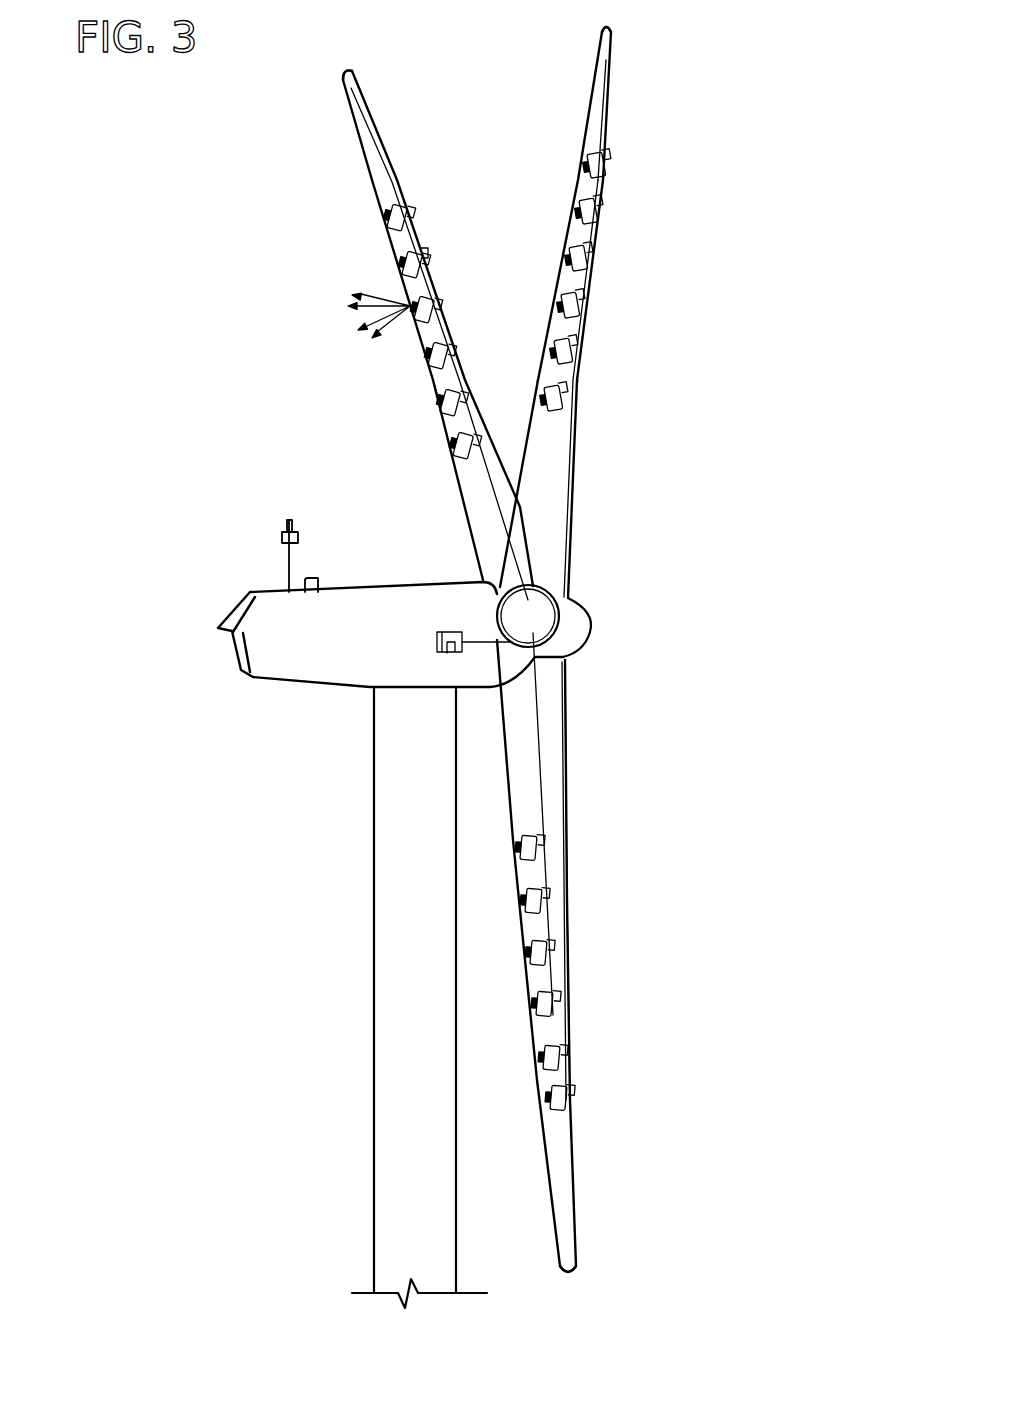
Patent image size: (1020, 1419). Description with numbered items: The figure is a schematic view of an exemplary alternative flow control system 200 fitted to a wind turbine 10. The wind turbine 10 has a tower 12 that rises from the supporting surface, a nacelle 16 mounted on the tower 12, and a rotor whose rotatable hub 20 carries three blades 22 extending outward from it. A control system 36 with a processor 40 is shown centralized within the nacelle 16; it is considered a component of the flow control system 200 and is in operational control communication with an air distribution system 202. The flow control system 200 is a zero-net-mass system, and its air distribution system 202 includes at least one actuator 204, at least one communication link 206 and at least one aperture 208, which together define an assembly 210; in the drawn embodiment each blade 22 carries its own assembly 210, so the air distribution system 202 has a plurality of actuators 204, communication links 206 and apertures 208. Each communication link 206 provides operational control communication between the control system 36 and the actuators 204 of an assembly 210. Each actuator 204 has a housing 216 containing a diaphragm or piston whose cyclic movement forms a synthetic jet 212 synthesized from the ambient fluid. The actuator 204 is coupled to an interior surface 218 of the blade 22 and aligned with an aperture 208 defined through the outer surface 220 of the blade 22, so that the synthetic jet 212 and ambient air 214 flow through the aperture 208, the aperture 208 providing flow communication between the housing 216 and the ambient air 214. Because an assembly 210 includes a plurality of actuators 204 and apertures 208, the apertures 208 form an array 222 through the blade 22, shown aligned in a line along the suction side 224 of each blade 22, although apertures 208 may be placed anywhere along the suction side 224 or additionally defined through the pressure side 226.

The wind turbine 10 is at (513, 659).
The tower 12 is at (373, 965).
The nacelle 16 is at (275, 688).
The rotatable hub 20 is at (610, 617).
The blade 22 is at (455, 465).
The control system 36 is at (448, 632).
The processor 40 is at (447, 653).
The flow control system 200 is at (514, 641).
The air distribution system 202 is at (398, 403).
The actuator 204 is at (605, 165).
The communication link 206 is at (570, 455).
The aperture 208 is at (385, 215).
The assembly 210 is at (366, 64).
The synthetic jet 212 is at (312, 302).
The ambient air 214 is at (698, 296).
The housing 216 is at (596, 150).
The interior surface 218 is at (377, 155).
The outer surface 220 is at (400, 258).
The array 222 is at (524, 170).
The suction side 224 is at (528, 1030).
The pressure side 226 is at (568, 893).